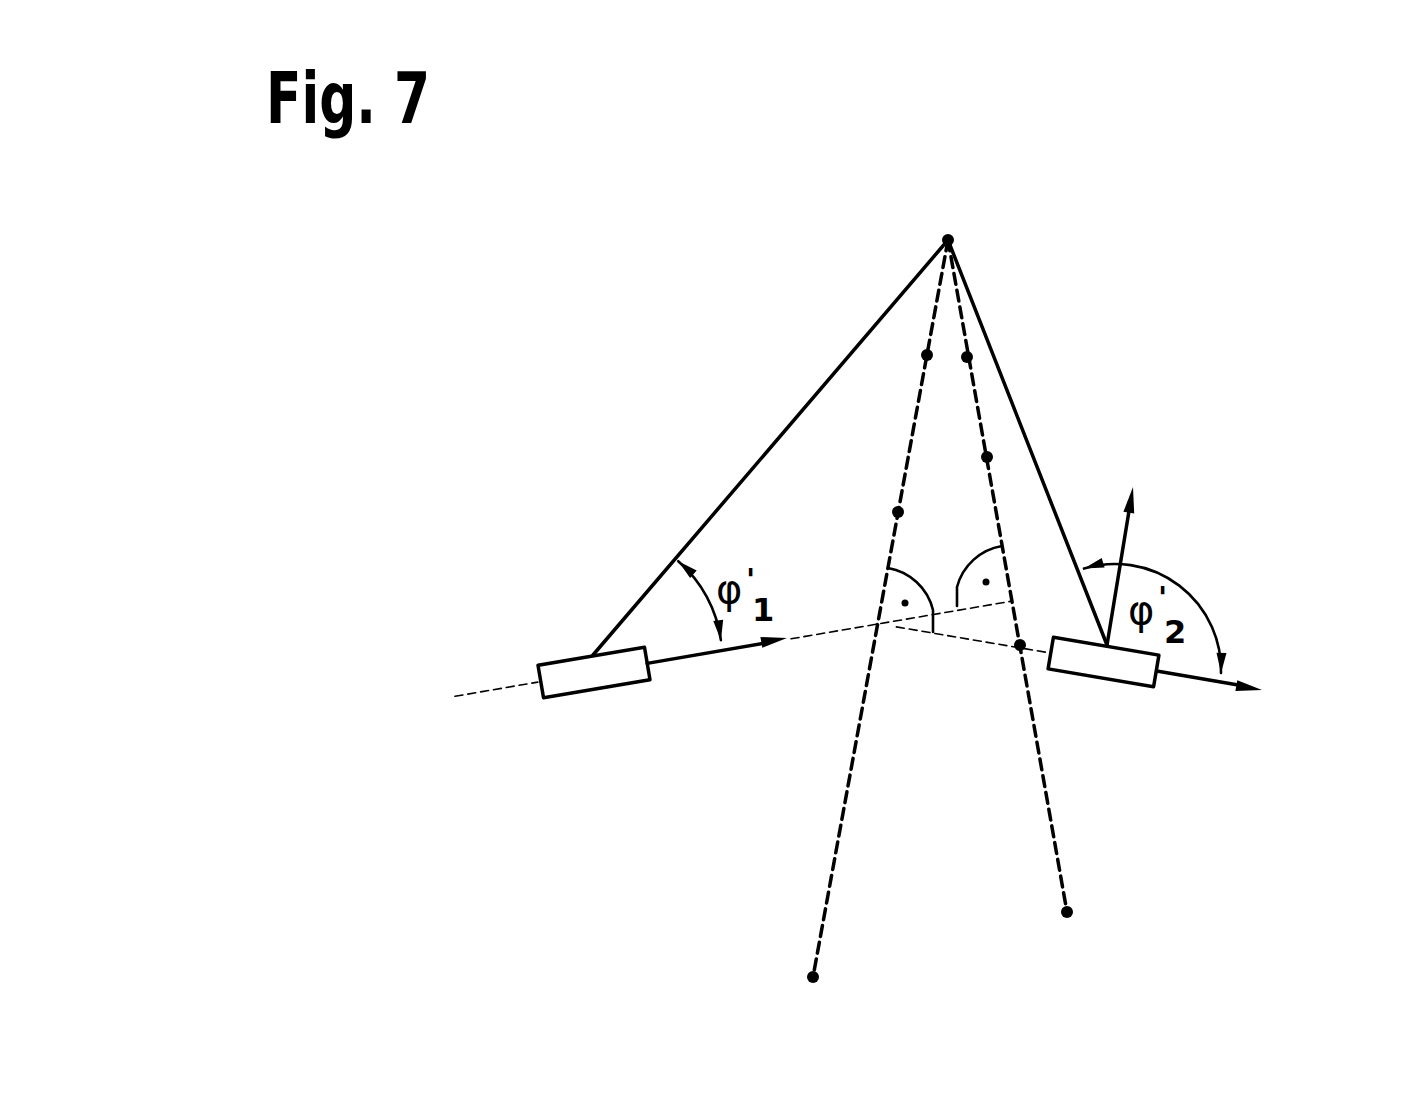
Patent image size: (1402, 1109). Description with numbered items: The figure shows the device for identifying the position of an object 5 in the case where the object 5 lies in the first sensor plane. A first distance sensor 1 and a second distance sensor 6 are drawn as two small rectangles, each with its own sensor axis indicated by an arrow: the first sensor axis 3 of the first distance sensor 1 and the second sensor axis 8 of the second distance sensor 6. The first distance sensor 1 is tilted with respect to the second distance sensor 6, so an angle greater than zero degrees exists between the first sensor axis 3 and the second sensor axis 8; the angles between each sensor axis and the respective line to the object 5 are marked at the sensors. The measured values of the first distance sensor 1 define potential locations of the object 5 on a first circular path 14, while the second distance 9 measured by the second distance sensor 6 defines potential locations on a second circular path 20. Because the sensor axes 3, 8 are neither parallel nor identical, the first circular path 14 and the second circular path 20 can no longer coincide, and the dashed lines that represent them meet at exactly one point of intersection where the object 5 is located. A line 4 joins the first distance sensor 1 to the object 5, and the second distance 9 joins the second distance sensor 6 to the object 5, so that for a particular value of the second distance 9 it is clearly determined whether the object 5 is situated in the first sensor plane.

The first distance sensor 1 is at (580, 692).
The first sensor axis 3 is at (685, 663).
The measured distance from first sensor to object 4 is at (818, 392).
The object 5 is at (948, 238).
The second distance sensor 6 is at (1113, 682).
The second sensor axis 8 is at (1198, 680).
The second distance 9 is at (1005, 380).
The first circular path 14 is at (1050, 820).
The second circular path 20 is at (828, 900).